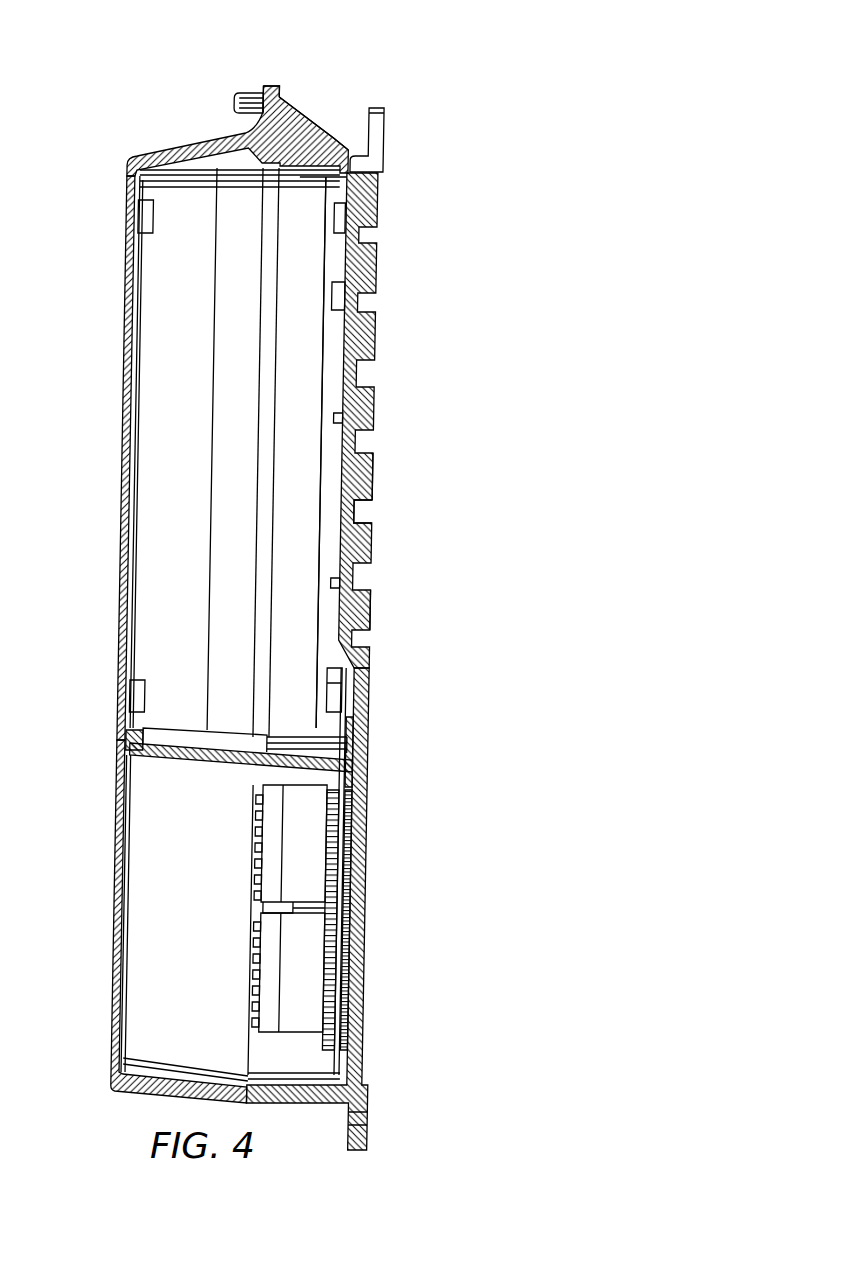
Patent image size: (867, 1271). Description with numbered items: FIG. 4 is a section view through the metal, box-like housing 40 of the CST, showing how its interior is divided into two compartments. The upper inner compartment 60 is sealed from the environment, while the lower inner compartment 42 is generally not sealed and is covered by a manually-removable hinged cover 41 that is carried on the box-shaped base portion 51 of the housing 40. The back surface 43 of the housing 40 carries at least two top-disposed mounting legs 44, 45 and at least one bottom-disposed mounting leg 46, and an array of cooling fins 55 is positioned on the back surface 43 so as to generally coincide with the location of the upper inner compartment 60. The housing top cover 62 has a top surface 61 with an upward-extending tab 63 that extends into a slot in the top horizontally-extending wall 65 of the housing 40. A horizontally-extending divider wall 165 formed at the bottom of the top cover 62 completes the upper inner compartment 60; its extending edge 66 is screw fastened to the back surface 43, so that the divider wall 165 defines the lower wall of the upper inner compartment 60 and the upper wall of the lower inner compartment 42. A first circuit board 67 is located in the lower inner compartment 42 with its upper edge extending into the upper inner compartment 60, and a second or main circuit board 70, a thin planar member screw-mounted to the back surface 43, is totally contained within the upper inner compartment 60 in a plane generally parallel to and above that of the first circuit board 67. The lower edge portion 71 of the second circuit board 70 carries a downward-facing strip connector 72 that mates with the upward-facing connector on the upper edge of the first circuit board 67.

The housing 40 is at (318, 90).
The hinged cover 41 is at (118, 952).
The lower inner compartment 42 is at (170, 873).
The back surface 43 is at (360, 245).
The top-disposed mounting leg 44 is at (437, 130).
The top-disposed mounting leg 45 is at (378, 126).
The bottom-disposed mounting leg 46 is at (378, 1130).
The base portion 51 is at (364, 982).
The cooling fins 55 is at (362, 472).
The upper inner compartment 60 is at (183, 392).
The top surface 61 is at (180, 153).
The top cover 62 is at (128, 442).
The upward-extending tab 63 is at (266, 86).
The top horizontally-extending wall 65 is at (322, 152).
The extending edge 66 is at (328, 758).
The first circuit board 67 is at (352, 786).
The second circuit board 70 is at (344, 500).
The lower edge portion 71 is at (248, 697).
The downward-facing strip connector 72 is at (270, 735).
The divider wall 165 is at (180, 733).